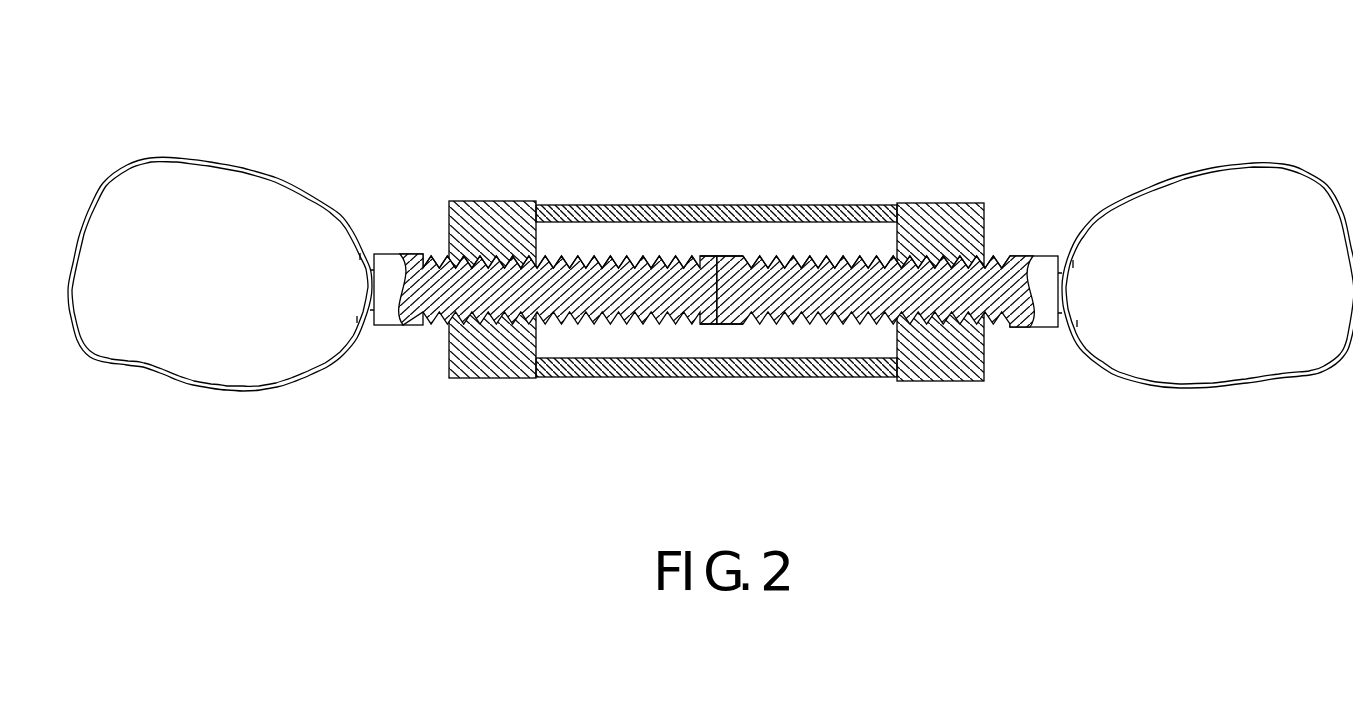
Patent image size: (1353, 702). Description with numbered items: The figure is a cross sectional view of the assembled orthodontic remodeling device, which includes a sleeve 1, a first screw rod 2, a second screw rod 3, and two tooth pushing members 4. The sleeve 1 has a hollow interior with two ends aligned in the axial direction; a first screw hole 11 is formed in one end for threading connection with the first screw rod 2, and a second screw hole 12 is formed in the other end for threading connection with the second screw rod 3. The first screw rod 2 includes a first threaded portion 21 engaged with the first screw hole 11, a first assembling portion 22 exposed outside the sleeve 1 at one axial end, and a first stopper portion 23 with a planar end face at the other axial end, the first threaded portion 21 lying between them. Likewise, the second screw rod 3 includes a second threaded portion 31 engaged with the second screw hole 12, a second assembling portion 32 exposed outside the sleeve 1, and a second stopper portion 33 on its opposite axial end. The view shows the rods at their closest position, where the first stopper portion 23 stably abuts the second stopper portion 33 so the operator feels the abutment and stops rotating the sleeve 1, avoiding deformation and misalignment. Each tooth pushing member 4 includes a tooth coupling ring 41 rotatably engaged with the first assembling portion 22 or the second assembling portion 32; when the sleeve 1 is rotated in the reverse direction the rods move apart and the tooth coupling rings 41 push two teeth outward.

The sleeve 1 is at (727, 370).
The first screw hole 11 is at (967, 253).
The second screw hole 12 is at (453, 222).
The first screw rod 2 is at (797, 222).
The first threaded portion 21 is at (840, 257).
The first assembling portion 22 is at (1040, 262).
The first stopper portion 23 is at (727, 257).
The second screw rod 3 is at (637, 223).
The second threaded portion 31 is at (597, 256).
The second assembling portion 32 is at (392, 260).
The second stopper portion 33 is at (708, 257).
The tooth pushing member 4 is at (710, 210).
The tooth coupling ring 41 is at (293, 185).